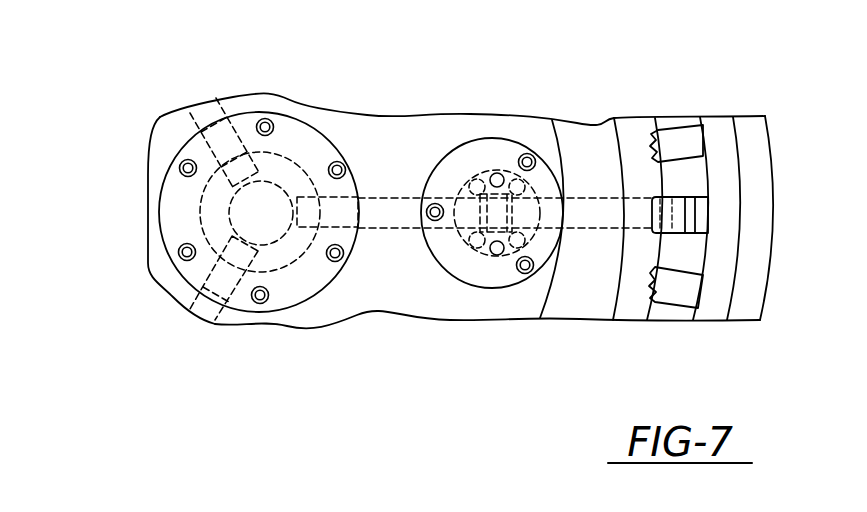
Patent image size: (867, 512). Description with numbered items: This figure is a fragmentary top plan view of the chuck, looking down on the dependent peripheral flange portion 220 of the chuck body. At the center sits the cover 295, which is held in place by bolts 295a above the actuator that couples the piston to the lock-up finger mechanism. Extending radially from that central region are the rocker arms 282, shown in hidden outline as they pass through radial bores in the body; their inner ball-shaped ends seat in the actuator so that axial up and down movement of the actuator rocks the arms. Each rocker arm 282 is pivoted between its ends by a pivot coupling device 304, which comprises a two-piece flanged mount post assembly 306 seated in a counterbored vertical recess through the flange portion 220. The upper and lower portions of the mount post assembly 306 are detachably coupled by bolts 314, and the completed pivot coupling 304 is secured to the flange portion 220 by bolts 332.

The peripheral flange portion 220 is at (382, 128).
The rocker arms 282 is at (226, 116).
The cover 295 is at (292, 130).
The bolts 295a is at (178, 170).
The pivot coupling devices 304 is at (533, 145).
The two-piece flanged mount post assembly 306 is at (498, 148).
The bolts 314 is at (472, 248).
The bolts 332 is at (530, 274).